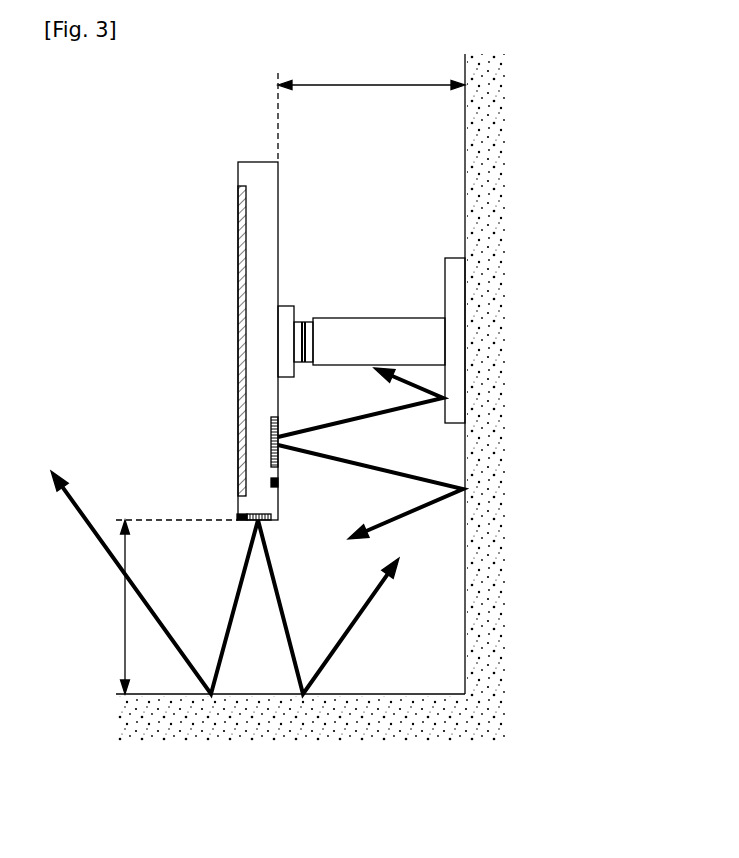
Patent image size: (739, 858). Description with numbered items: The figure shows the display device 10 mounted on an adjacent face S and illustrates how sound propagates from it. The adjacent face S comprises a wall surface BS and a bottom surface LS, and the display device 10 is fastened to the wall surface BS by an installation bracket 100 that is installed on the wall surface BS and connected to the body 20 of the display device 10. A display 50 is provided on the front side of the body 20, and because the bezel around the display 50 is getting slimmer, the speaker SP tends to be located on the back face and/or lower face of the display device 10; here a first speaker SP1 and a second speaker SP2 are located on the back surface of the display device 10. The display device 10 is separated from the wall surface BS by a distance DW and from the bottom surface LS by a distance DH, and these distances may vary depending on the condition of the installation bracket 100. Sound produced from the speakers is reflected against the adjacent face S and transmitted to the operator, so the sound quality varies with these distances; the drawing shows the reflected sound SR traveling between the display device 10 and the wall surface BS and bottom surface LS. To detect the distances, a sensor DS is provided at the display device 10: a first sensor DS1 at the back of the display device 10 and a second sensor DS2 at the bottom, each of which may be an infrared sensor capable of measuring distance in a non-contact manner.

The display device 10 is at (147, 138).
The body 20 is at (243, 170).
The display 50 is at (243, 298).
The installation bracket 100 is at (365, 318).
The speaker SP is at (160, 425).
The first speaker SP1 is at (270, 428).
The second speaker SP2 is at (262, 511).
The sensor DS is at (160, 487).
The first sensor DS1 is at (277, 481).
The second sensor DS2 is at (240, 511).
The distance DH is at (168, 607).
The distance DW is at (371, 113).
The adjacent face S is at (568, 105).
The wall surface BS is at (500, 122).
The bottom surface LS is at (322, 740).
The sensing rays SR is at (355, 622).